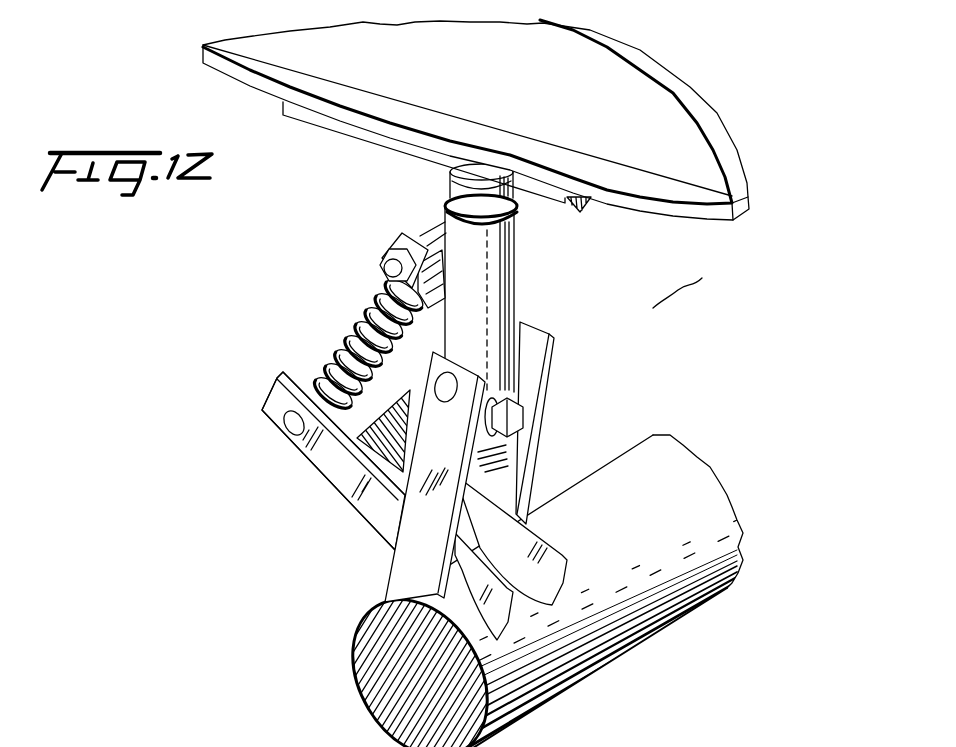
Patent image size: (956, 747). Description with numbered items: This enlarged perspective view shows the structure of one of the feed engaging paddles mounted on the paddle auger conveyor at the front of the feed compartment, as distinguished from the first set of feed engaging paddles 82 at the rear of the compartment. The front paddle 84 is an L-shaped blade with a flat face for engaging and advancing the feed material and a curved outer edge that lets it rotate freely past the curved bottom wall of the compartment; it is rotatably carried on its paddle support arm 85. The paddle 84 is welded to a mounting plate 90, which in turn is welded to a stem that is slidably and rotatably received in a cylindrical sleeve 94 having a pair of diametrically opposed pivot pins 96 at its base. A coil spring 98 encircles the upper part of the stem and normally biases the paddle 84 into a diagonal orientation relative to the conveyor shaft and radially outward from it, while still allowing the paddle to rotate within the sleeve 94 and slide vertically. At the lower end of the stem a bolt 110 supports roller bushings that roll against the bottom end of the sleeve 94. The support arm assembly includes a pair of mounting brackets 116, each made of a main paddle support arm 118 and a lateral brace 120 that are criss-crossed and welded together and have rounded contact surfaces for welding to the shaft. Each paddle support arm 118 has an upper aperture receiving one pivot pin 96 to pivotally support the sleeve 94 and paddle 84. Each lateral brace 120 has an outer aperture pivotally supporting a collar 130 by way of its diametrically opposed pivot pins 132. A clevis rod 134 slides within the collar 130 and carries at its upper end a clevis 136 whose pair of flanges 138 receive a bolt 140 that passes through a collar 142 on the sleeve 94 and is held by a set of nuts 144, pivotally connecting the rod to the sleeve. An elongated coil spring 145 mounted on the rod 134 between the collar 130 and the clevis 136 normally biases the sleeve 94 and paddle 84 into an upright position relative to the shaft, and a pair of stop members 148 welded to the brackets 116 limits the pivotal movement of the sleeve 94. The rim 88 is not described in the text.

The feed engaging paddles 82 is at (727, 588).
The feed engaging paddle 84 is at (616, 67).
The paddle support arm 85 is at (686, 284).
The seat rim 88 is at (702, 110).
The mounting plate 90 is at (562, 203).
The cylindrical sleeve 94 is at (508, 257).
The pivot pins 96 is at (377, 481).
The coil spring 98 is at (445, 190).
The bolt 110 is at (520, 413).
The mounting bracket 116 is at (333, 497).
The paddle support arm 118 is at (397, 568).
The lateral brace 120 is at (312, 455).
The collar 130 is at (288, 374).
The pivot pins 132 is at (286, 421).
The clevis rod 134 is at (352, 330).
The clevis 136 is at (437, 276).
The flanges 138 is at (396, 242).
The bolt 140 is at (397, 274).
The collar 142 is at (433, 233).
The nuts 144 is at (386, 253).
The elongated coil spring 145 is at (357, 337).
The stop members 148 is at (310, 457).